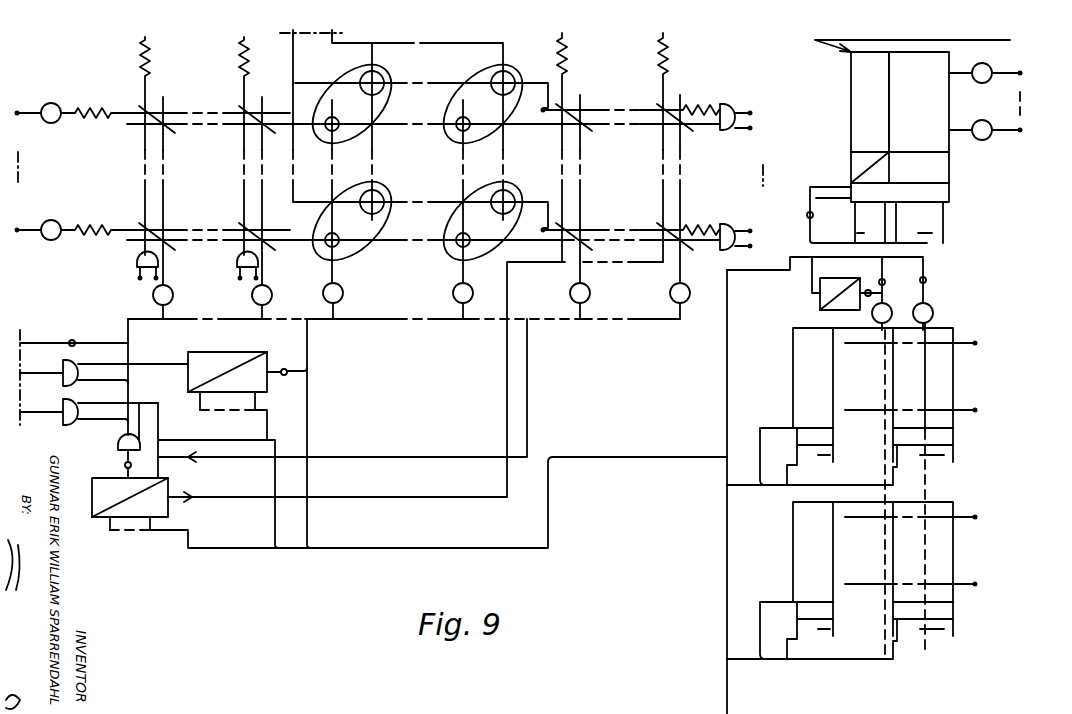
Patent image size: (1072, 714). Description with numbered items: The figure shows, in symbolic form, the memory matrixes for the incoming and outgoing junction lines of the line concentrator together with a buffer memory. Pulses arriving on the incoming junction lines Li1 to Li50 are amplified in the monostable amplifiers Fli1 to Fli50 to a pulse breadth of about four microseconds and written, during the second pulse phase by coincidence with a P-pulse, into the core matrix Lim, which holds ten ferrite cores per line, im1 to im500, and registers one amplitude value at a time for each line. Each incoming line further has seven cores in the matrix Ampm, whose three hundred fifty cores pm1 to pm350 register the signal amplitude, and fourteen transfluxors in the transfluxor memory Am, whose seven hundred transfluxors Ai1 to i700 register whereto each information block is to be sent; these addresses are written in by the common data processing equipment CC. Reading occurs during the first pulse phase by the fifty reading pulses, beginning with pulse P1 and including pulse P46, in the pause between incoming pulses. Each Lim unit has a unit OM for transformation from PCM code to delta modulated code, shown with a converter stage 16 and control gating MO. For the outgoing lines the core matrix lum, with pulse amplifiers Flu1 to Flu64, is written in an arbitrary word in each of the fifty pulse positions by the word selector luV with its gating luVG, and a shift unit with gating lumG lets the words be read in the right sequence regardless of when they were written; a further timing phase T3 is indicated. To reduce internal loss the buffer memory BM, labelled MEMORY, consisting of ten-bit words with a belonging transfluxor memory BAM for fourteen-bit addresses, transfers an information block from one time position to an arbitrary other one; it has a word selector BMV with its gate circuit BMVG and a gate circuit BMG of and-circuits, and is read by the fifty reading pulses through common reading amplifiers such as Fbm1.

The incoming junction line Li50 is at (26, 124).
The monostable amplifier Fli50 is at (61, 103).
The incoming junction line Li1 is at (25, 241).
The monostable amplifier Fli1 is at (59, 240).
The ferrite core im1 is at (149, 108).
The core matrix for incoming junction lines Lim is at (226, 161).
The common data processing equipment CC is at (400, 127).
The transfluxor memory Am is at (421, 158).
The transfluxor Ai1 is at (334, 96).
The ferrite core pm350 is at (571, 107).
The core matrix Ampm is at (661, 158).
The ferrite core pm1 is at (686, 236).
The pulse position P1 is at (166, 280).
The pulse position P46 is at (265, 280).
The ferrite core im500 is at (382, 291).
The transfluxor i700 is at (484, 250).
The control gate section MO is at (99, 396).
The 16/4 converter 16 is at (232, 448).
The PCM-code PCM is at (409, 405).
The transformation unit OM is at (92, 497).
The word selector luV is at (912, 96).
The core matrix for outgoing junction lines lum is at (919, 102).
The shifting unit shift is at (900, 168).
The lum gate lumG is at (950, 192).
The pulse amplifier Flu64 is at (984, 70).
The pulse amplifier Flu1 is at (986, 137).
The luV gate luVG is at (851, 186).
The T3 timing frame T3 is at (839, 286).
The reading amplifier Fbm1 is at (932, 308).
The word selector BMV is at (813, 465).
The transfluxor memory BAM is at (879, 491).
The buffer memory BM is at (928, 465).
The buffer memory MEMORY is at (999, 560).
The gate circuit BMVG is at (797, 607).
The gate circuit BMG is at (952, 440).